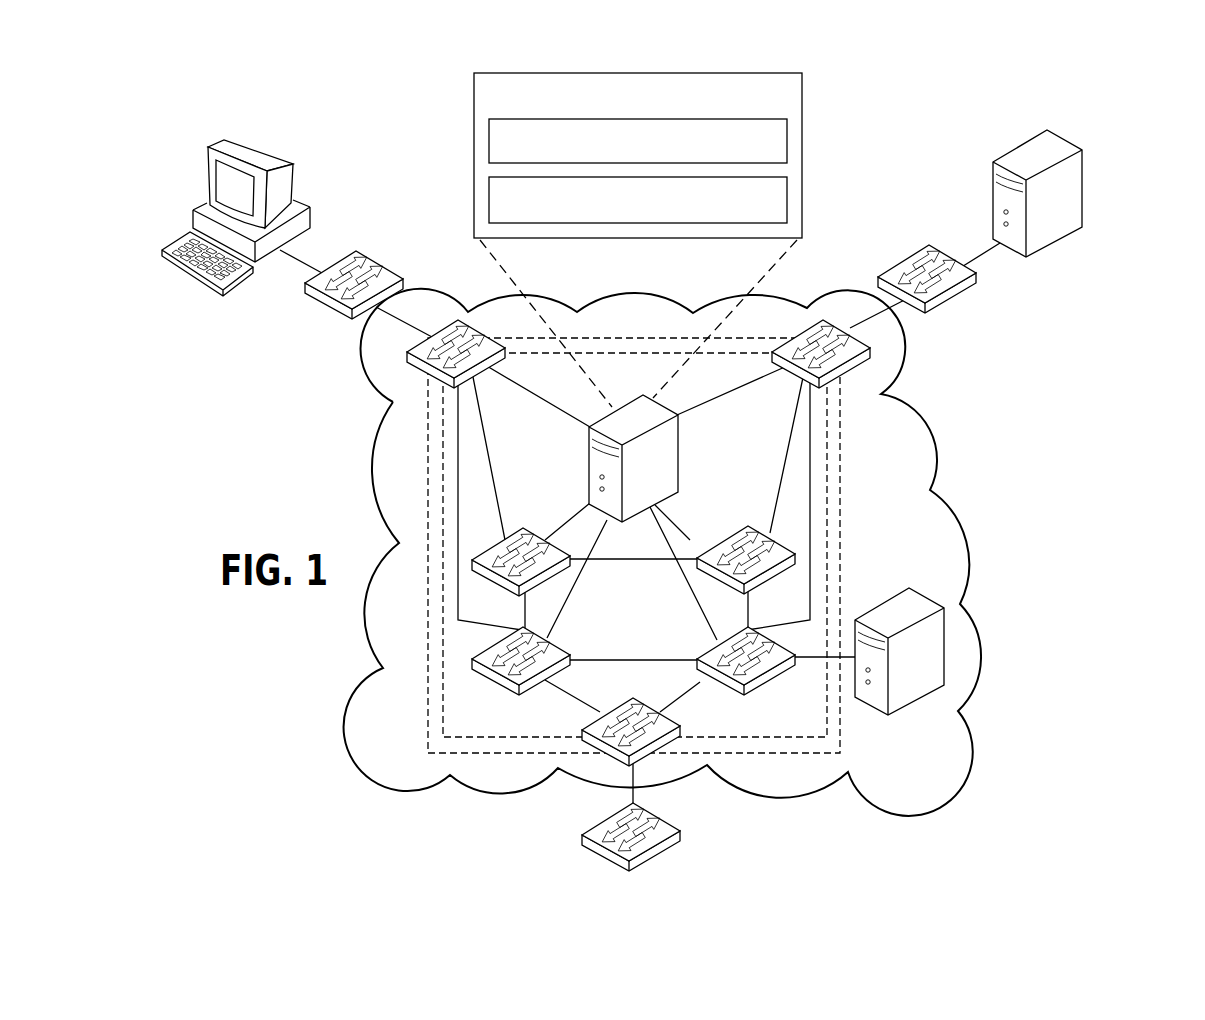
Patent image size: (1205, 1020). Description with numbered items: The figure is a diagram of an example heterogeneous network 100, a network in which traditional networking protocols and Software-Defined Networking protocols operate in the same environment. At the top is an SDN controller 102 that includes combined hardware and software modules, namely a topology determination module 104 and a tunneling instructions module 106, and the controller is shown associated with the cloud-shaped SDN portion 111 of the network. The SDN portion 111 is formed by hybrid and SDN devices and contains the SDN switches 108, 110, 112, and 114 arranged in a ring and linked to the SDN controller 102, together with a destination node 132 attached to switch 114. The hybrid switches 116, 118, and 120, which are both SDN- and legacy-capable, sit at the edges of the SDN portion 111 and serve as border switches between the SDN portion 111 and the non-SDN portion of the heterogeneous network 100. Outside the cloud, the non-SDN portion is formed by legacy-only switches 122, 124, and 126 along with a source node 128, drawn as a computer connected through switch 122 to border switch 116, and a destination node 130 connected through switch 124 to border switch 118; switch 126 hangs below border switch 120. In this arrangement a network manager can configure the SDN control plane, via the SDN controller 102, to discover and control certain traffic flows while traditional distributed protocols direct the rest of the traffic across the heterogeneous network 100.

The heterogeneous network 100 is at (177, 127).
The SDN controller 102 is at (680, 447).
The topology determination module 104 is at (489, 141).
The tunneling instructions module 106 is at (489, 200).
The SDN switch 108 is at (524, 529).
The SDN switch 110 is at (746, 527).
The SDN portion 111 is at (373, 471).
The SDN switch 112 is at (557, 643).
The SDN switch 114 is at (710, 643).
The hybrid switch 116 is at (407, 352).
The hybrid switch 118 is at (872, 352).
The hybrid switch 120 is at (672, 715).
The legacy-only switch 122 is at (380, 258).
The legacy-only switch 124 is at (903, 258).
The legacy-only switch 126 is at (668, 815).
The source node 128 is at (297, 186).
The destination node 130 is at (1083, 189).
The destination node 132 is at (883, 603).